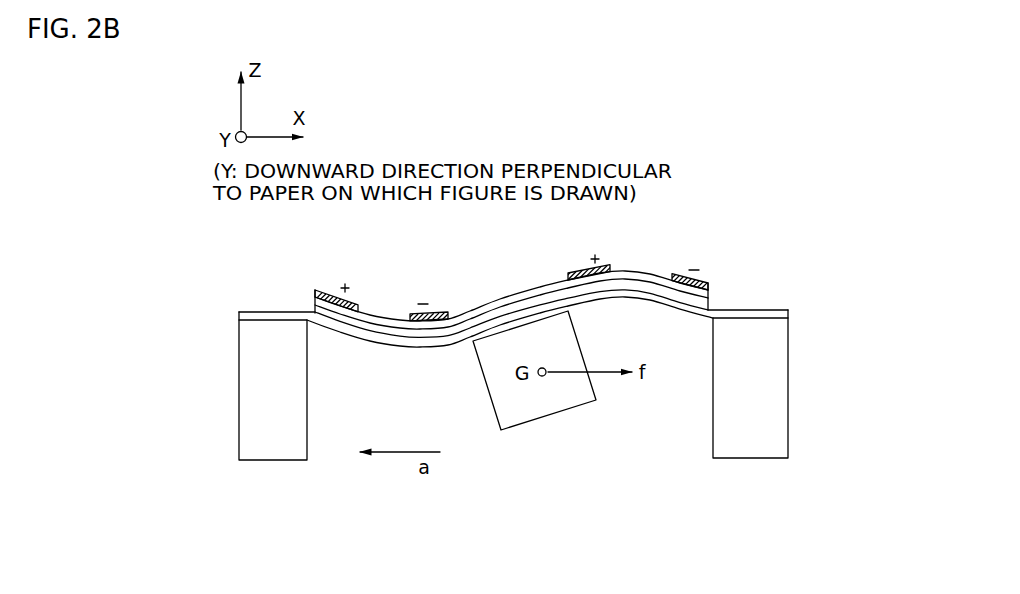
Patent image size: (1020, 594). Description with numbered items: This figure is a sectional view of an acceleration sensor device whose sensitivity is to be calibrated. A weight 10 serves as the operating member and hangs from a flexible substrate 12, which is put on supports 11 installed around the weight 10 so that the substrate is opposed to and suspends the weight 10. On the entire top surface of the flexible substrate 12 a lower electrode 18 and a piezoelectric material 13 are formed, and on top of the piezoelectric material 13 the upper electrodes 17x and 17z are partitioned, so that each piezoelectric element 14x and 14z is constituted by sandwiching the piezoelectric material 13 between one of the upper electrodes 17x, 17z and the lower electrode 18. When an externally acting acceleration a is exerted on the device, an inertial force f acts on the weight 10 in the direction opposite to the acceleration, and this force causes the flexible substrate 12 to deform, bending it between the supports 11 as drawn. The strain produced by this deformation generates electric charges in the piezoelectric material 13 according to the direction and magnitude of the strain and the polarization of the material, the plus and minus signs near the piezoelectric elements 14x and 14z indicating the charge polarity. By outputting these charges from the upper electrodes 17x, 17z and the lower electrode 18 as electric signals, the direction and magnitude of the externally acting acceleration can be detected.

The weight 10 is at (558, 400).
The supports 11 is at (247, 372).
The flexible substrate 12 is at (400, 345).
The piezoelectric material 13 is at (313, 300).
The piezoelectric element 14x is at (329, 287).
The piezoelectric element 14z is at (571, 266).
The upper electrode 17x is at (317, 292).
The upper electrode 17z is at (570, 278).
The lower electrode 18 is at (314, 309).